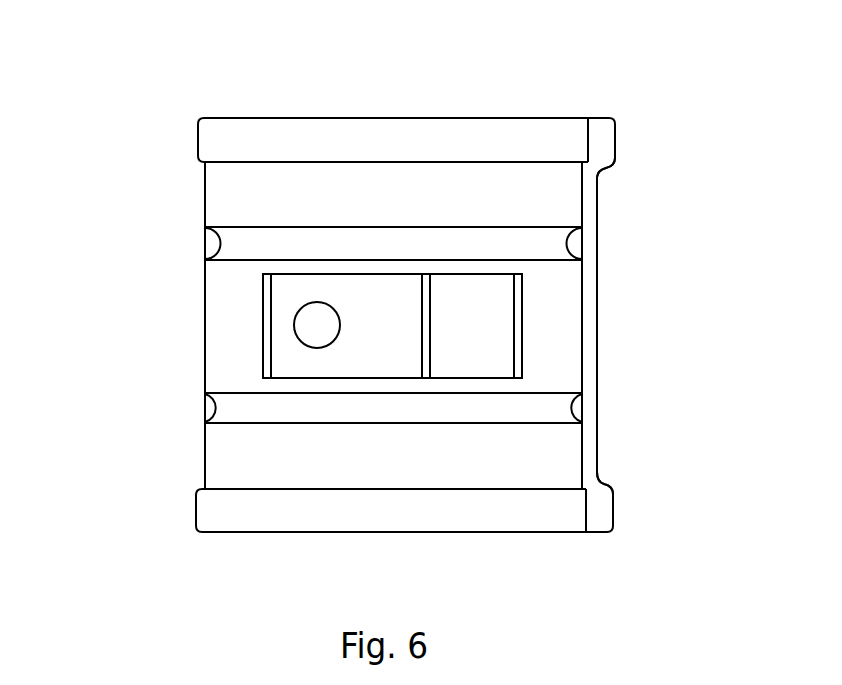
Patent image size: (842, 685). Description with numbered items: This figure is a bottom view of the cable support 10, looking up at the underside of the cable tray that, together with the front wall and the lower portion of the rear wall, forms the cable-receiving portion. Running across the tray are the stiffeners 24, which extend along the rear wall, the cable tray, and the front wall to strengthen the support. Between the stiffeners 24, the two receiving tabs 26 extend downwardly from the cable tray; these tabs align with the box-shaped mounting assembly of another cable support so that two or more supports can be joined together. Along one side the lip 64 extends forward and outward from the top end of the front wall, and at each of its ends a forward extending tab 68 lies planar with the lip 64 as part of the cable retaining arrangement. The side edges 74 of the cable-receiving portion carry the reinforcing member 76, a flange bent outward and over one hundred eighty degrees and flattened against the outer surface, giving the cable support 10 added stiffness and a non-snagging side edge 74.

The cable support 10 is at (140, 251).
The stiffeners 24 is at (466, 256).
The receiving tabs 26 is at (263, 324).
The lip 64 is at (588, 230).
The forward extending tab 68 is at (607, 142).
The side edges 74 is at (505, 532).
The reinforcing member 76 is at (410, 153).